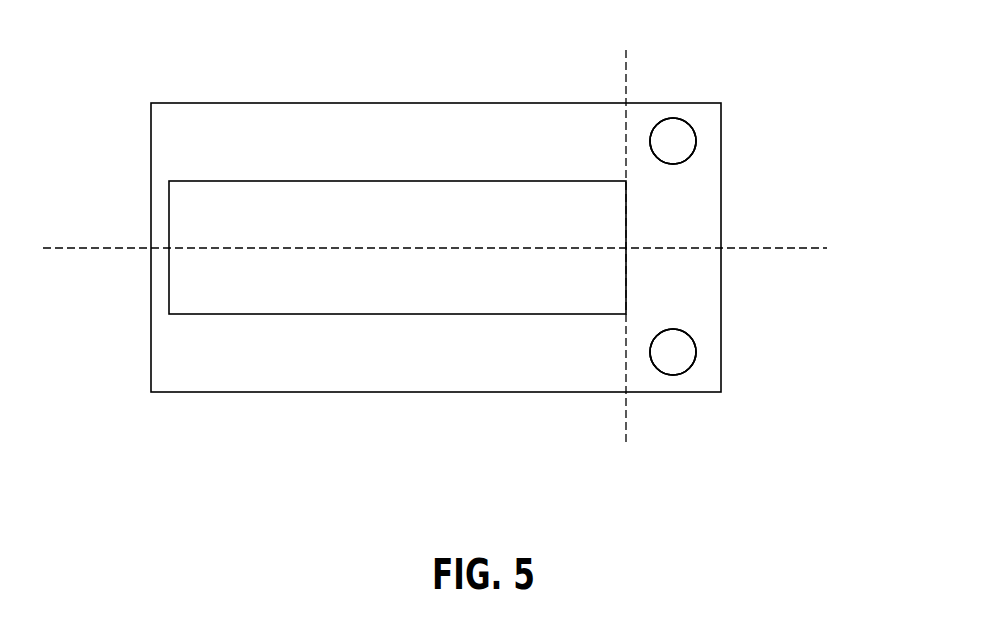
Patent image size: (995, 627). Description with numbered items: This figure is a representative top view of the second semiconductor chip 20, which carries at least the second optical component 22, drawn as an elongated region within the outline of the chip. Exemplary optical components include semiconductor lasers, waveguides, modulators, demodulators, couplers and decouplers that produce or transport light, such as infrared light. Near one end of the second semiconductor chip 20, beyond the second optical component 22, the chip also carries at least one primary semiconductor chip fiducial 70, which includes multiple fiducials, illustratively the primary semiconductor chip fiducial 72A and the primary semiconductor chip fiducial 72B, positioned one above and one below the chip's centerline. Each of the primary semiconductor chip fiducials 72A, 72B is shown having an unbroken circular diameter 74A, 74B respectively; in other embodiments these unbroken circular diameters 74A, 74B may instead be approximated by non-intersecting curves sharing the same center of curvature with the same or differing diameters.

The second semiconductor chip 20 is at (493, 392).
The second optical component 22 is at (352, 314).
The primary semiconductor chip fiducial 70 is at (708, 176).
The primary semiconductor chip fiducial 72A is at (716, 139).
The primary semiconductor chip fiducial 72B is at (717, 338).
The unbroken circular diameter 74A is at (673, 118).
The unbroken circular diameter 74B is at (672, 375).